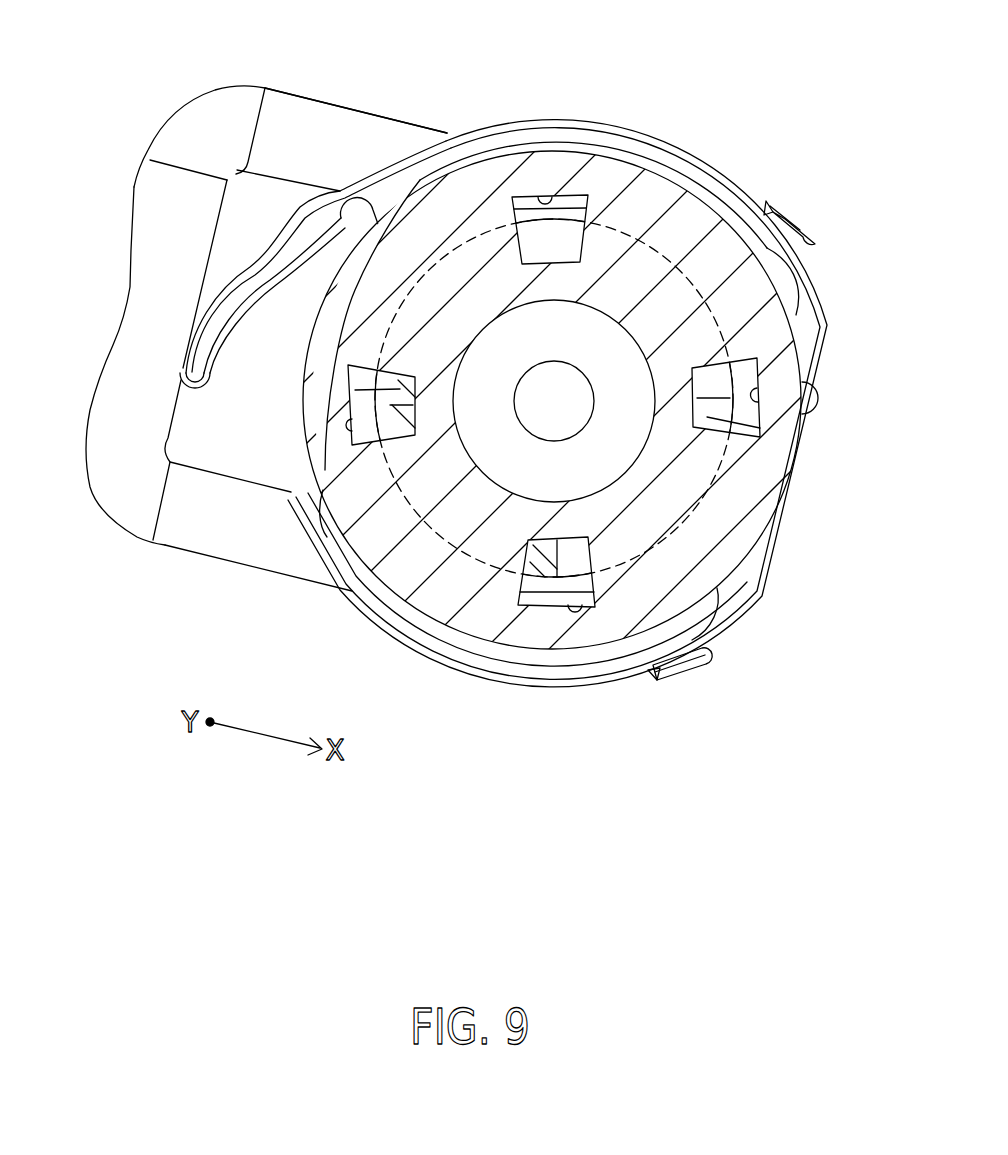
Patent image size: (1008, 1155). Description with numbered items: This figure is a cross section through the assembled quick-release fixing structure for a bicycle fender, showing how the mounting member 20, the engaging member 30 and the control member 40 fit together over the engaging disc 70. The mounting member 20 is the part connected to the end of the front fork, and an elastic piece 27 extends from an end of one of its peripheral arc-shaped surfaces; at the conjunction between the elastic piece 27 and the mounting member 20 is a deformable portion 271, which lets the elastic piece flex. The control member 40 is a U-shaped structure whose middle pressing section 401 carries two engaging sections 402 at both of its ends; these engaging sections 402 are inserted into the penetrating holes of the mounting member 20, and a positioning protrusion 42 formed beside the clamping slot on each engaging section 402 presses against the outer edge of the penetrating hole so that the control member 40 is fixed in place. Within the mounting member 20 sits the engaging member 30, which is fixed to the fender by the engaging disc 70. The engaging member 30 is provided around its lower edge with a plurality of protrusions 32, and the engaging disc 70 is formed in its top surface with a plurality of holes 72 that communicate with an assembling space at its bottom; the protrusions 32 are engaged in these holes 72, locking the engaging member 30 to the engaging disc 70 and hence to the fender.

The mounting member 20 is at (690, 148).
The elastic piece 27 is at (192, 355).
The deformable portion 271 is at (348, 198).
The engaging member 30 is at (667, 258).
The protrusions 32 is at (345, 390).
The control member 40 is at (200, 97).
The pressing section 401 is at (155, 272).
The engaging sections 402 is at (368, 118).
The positioning protrusion 42 is at (788, 222).
The engaging disc 70 is at (627, 168).
The holes 72 is at (546, 200).